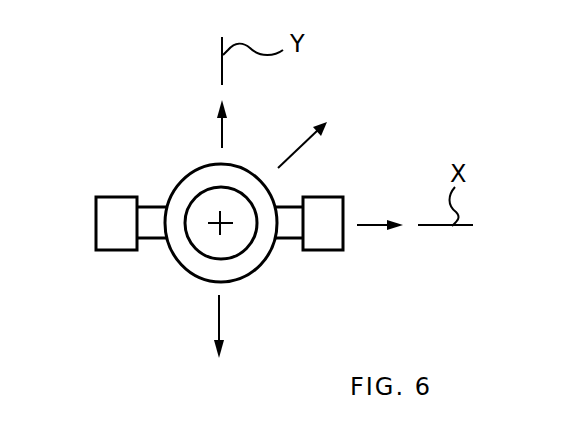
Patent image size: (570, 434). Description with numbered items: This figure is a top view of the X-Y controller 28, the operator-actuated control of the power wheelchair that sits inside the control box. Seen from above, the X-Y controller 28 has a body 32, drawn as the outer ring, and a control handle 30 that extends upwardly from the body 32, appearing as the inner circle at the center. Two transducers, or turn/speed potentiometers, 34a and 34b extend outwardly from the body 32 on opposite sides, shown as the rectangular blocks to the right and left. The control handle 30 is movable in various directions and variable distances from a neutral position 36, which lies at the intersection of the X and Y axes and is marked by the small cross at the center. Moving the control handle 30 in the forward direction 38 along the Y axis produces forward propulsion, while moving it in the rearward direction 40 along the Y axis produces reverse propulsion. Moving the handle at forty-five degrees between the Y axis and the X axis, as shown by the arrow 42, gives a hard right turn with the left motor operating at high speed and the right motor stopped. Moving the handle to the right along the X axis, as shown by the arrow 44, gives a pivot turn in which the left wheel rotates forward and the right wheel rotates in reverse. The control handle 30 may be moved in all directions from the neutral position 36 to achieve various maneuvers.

The X-Y controller 28 is at (386, 71).
The control handle 30 is at (188, 247).
The body 32 is at (254, 276).
The transducer 34a is at (331, 251).
The transducer 34b is at (113, 251).
The neutral position 36 is at (210, 225).
The forward direction 38 is at (221, 133).
The rearward direction 40 is at (219, 323).
The arrow 42 is at (292, 147).
The arrow 44 is at (373, 228).